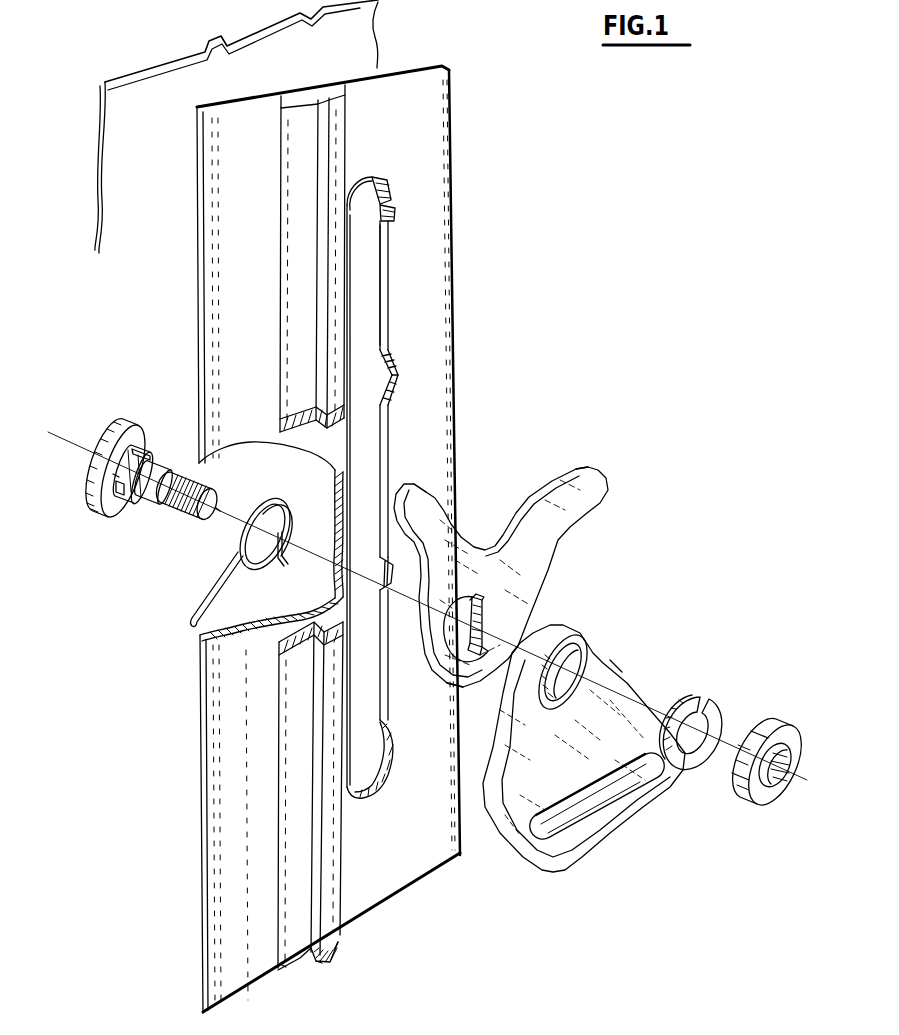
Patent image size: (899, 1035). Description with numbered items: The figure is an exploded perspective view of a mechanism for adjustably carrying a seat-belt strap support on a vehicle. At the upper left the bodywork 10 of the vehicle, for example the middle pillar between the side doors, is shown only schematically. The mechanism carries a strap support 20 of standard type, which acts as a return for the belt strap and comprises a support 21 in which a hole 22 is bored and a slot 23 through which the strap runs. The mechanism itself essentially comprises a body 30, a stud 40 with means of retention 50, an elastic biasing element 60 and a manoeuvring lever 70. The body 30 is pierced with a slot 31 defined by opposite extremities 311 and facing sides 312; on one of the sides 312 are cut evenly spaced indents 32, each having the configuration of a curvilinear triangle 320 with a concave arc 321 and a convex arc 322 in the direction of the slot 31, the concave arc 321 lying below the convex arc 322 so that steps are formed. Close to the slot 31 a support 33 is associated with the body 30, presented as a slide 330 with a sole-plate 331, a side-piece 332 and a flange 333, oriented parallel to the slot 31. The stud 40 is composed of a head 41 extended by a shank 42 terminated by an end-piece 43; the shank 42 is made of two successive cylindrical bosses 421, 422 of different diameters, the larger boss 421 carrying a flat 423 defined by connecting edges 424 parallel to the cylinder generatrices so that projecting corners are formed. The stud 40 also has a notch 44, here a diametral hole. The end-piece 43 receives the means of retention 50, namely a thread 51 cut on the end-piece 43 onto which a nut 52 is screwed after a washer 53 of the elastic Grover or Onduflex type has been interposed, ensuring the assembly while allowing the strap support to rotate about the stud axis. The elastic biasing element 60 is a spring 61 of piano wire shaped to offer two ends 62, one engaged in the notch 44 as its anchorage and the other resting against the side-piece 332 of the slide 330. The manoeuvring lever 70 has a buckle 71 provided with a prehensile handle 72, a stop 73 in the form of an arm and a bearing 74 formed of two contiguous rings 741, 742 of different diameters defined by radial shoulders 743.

The bodywork 10 is at (180, 83).
The strap support 20 is at (587, 771).
The support 21 is at (622, 683).
The hole 22 is at (560, 662).
The slot 23 is at (603, 800).
The body 30 is at (362, 525).
The slot 31 is at (375, 475).
The indents 32 is at (367, 202).
The support 33 is at (376, 525).
The extremities 311 is at (358, 177).
The sides 312 is at (383, 264).
The curvilinear triangle 320 is at (385, 380).
The concave arc 321 is at (395, 396).
The convex arc 322 is at (392, 368).
The slide 330 is at (460, 905).
The sole-plate 331 is at (288, 947).
The side-piece 332 is at (325, 954).
The flange 333 is at (337, 940).
The stud 40 is at (172, 463).
The head 41 is at (100, 445).
The shank 42 is at (173, 487).
The end-piece 43 is at (223, 498).
The notch 44 is at (114, 478).
The cylindrical boss 421 is at (120, 497).
The cylindrical boss 422 is at (142, 495).
The flat 423 is at (133, 455).
The connecting edges 424 is at (150, 455).
The means of retention 50 is at (735, 762).
The thread 51 is at (205, 487).
The nut 52 is at (763, 795).
The washer 53 is at (690, 765).
The elastic biasing element 60 is at (227, 571).
The spring 61 is at (277, 517).
The ends 62 is at (195, 597).
The manoeuvring lever 70 is at (534, 568).
The buckle 71 is at (472, 668).
The prehensile handle 72 is at (590, 500).
The stop 73 is at (428, 498).
The bearing 74 is at (511, 605).
The ring 741 is at (465, 570).
The ring 742 is at (480, 618).
The radial shoulders 743 is at (472, 600).